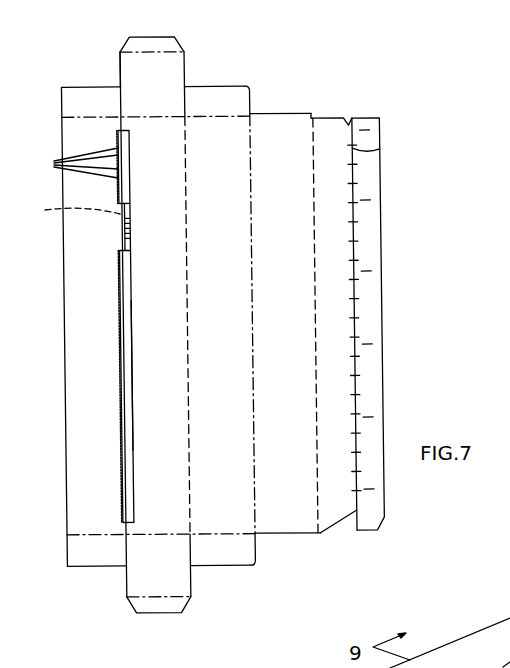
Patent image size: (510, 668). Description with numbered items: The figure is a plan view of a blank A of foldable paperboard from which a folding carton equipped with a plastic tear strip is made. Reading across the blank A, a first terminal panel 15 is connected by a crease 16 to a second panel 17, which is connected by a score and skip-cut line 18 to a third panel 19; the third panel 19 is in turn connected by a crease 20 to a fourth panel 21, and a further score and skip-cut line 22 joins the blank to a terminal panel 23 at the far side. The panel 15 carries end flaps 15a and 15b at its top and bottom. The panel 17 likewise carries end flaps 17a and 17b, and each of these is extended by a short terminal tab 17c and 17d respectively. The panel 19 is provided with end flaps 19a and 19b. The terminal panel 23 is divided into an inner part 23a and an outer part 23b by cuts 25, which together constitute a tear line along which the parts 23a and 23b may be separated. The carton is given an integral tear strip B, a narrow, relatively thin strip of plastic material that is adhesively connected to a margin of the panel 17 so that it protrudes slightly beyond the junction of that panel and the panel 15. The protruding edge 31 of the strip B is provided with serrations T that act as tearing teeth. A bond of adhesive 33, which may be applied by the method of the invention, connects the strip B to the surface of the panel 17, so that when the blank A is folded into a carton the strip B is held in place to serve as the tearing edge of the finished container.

The blank A is at (109, 77).
The first terminal panel 15 is at (99, 294).
The end flap 15a is at (76, 88).
The end flap 15b is at (88, 556).
The crease 16 is at (120, 236).
The second panel 17 is at (164, 289).
The end flap 17a is at (172, 73).
The end flap 17b is at (138, 576).
The short terminal tab 17c is at (181, 40).
The short terminal tab 17d is at (165, 613).
The score and skip-cut line 18 is at (188, 310).
The third panel 19 is at (225, 292).
The end flap 19a is at (233, 95).
The end flap 19b is at (240, 555).
The crease 20 is at (252, 318).
The fourth panel 21 is at (290, 290).
The score and skip-cut line 22 is at (315, 406).
The terminal panel 23 is at (343, 290).
The inner part 23a is at (328, 131).
The outer part 23b is at (366, 121).
The cuts 25 is at (383, 150).
The protruding edge 31 is at (120, 488).
The bond of adhesive 33 is at (69, 211).
The serrations T is at (76, 163).
The tear strip B is at (125, 367).